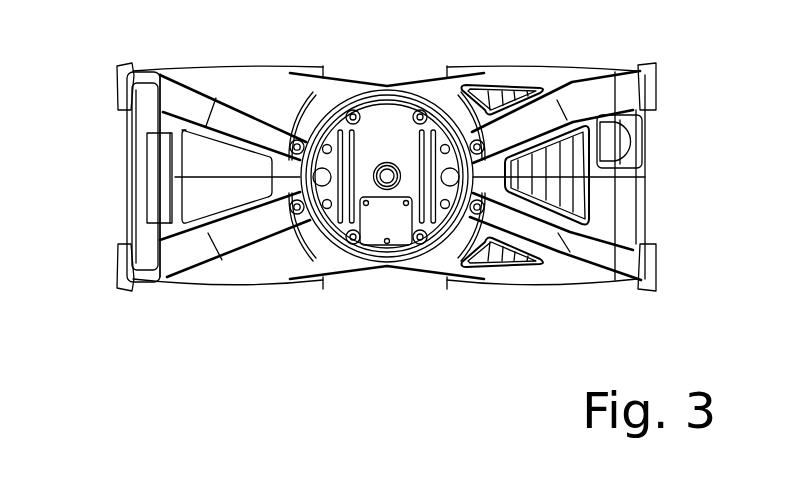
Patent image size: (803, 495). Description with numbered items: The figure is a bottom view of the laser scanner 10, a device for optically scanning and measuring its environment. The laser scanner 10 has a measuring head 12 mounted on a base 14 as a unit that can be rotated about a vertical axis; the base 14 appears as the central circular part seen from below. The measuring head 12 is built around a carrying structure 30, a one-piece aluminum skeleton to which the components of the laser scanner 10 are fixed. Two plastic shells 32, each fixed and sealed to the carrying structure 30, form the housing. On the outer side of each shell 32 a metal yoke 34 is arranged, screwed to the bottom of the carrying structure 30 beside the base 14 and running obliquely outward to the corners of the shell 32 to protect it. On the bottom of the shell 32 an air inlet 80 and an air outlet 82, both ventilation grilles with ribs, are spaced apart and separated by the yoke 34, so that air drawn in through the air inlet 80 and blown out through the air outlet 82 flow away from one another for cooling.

The laser scanner 10 is at (200, 334).
The measuring head 12 is at (115, 144).
The base 14 is at (409, 183).
The carrying structure 30 is at (364, 64).
The shell 32 is at (549, 88).
The yoke 34 is at (231, 112).
The air inlet 80 is at (503, 262).
The air outlet 82 is at (577, 198).